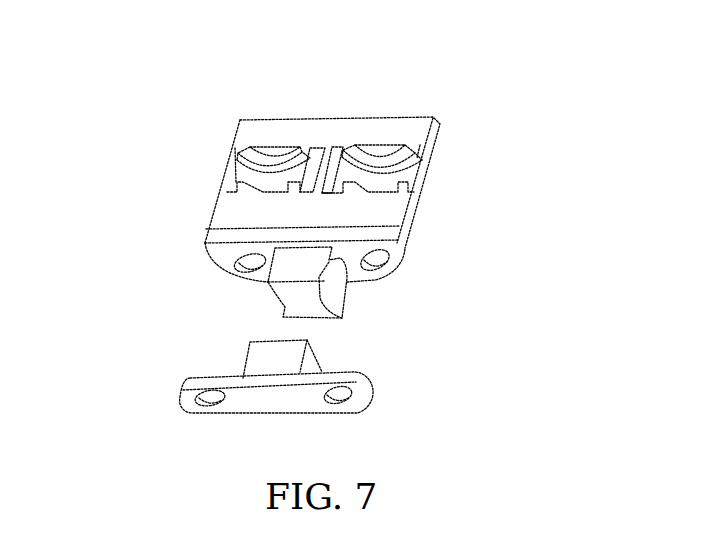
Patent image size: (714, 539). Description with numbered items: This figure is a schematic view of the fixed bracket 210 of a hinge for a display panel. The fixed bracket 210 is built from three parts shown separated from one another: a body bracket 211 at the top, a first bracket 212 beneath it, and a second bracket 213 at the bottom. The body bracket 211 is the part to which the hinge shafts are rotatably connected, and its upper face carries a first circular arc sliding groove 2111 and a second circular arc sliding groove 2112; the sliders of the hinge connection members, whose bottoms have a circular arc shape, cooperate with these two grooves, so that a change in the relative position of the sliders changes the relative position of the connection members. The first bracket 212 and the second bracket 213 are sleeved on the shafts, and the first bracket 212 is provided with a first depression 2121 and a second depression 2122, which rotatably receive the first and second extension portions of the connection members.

The fixed bracket 210 is at (150, 40).
The body bracket 211 is at (355, 123).
The first circular arc sliding groove 2111 is at (227, 175).
The second circular arc sliding groove 2112 is at (423, 173).
The first bracket 212 is at (403, 260).
The first depression 2121 is at (240, 284).
The second depression 2122 is at (365, 293).
The second bracket 213 is at (373, 395).